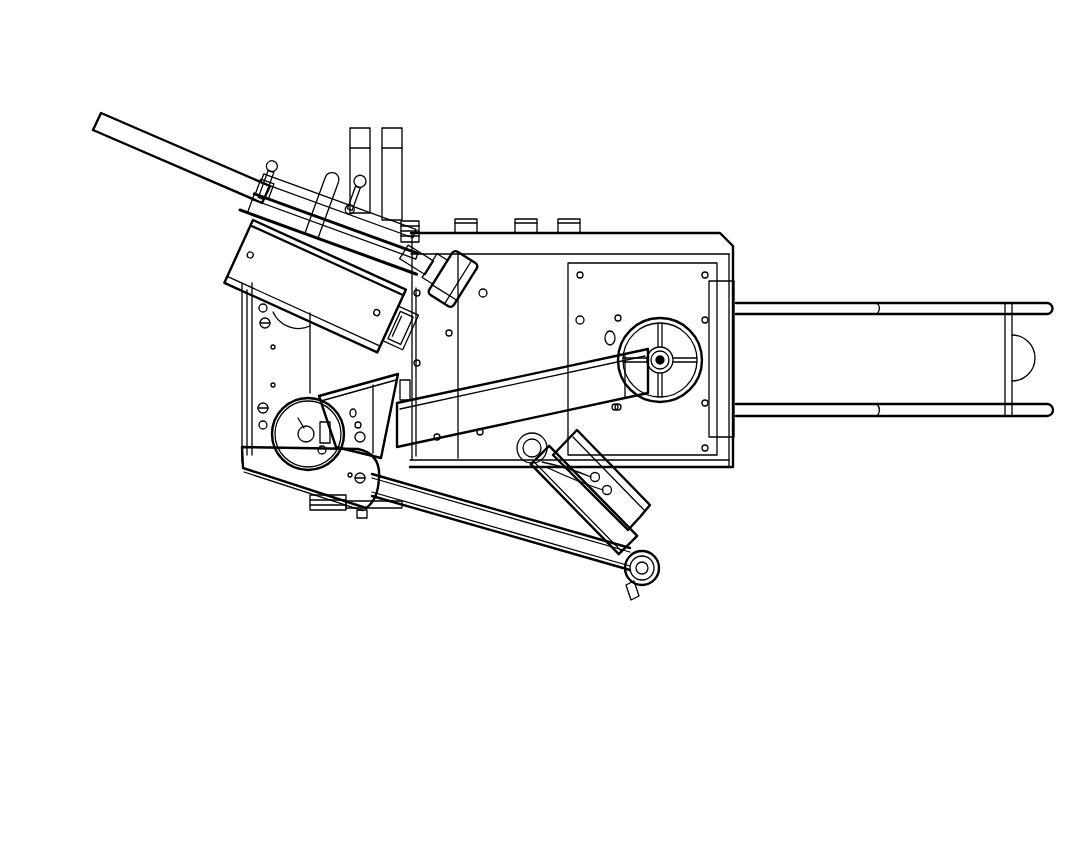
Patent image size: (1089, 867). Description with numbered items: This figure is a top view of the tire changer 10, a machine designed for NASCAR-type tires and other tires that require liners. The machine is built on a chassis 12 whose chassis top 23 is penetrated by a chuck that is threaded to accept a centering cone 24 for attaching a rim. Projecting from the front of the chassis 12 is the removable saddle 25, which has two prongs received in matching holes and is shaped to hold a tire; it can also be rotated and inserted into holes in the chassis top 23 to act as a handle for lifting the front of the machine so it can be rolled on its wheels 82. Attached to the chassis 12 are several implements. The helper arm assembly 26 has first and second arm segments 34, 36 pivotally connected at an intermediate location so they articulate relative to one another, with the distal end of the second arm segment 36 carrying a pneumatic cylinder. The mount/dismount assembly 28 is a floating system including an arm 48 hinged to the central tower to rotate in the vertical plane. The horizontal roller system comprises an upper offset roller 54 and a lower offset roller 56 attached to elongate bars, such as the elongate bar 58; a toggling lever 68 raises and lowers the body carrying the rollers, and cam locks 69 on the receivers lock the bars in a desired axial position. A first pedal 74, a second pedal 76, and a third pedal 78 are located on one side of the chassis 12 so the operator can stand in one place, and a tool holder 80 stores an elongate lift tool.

The tire changer 10 is at (720, 110).
The chassis 12 is at (585, 308).
The chassis top 23 is at (556, 303).
The centering cone 24 is at (690, 322).
The saddle 25 is at (853, 303).
The helper arm assembly 26 is at (600, 594).
The mount/dismount assembly 28 is at (498, 366).
The first arm segment 34 is at (514, 538).
The second arm segment 36 is at (632, 522).
The arm 48 is at (523, 415).
The upper offset roller 54 is at (443, 303).
The lower offset roller 56 is at (480, 275).
The elongate bar 58 is at (172, 140).
The toggling lever 68 is at (367, 179).
The cam locks 69 is at (272, 161).
The first pedal 74 is at (570, 218).
The second pedal 76 is at (524, 218).
The third pedal 78 is at (467, 218).
The tool holder 80 is at (400, 130).
The wheels 82 is at (414, 216).